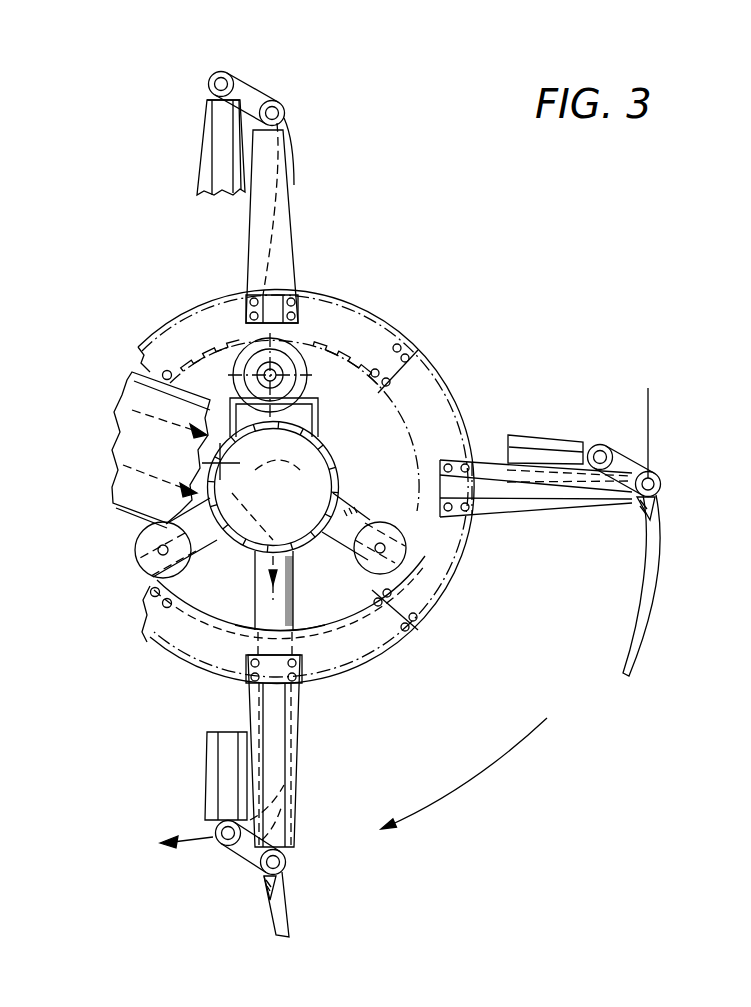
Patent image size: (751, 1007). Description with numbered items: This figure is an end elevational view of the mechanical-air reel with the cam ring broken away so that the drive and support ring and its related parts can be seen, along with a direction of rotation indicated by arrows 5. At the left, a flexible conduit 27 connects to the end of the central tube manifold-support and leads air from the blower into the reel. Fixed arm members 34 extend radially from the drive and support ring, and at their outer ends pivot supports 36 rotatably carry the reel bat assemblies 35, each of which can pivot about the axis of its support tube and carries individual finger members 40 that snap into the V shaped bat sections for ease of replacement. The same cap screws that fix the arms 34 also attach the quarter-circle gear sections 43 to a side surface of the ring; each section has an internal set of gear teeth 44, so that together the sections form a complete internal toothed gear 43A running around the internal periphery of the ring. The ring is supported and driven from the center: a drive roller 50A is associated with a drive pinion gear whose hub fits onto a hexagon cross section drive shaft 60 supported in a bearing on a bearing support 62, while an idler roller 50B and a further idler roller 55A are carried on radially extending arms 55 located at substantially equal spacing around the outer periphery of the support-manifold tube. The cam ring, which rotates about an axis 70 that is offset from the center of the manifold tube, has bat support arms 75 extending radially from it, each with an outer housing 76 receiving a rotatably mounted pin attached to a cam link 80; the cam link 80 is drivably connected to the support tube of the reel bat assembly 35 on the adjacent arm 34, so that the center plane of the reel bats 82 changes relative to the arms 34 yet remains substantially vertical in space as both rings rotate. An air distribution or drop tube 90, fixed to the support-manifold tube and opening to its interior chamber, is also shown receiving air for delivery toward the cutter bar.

The direction arrow 5 is at (200, 258).
The flexible conduit 27 is at (128, 502).
The arm member 34 is at (294, 196).
The reel bat assembly 35 is at (667, 508).
The pivot support 36 is at (330, 78).
The finger member 40 is at (283, 140).
The gear section 43 is at (334, 668).
The internal toothed gear 43A is at (342, 620).
The internal gear teeth 44 is at (340, 354).
The drive roller 50A is at (252, 343).
The idler roller 50B is at (405, 540).
The radially extending arm 55 is at (353, 507).
The roller 55A is at (152, 555).
The drive shaft 60 is at (277, 375).
The bearing support 62 is at (318, 410).
The axis of cam ring 70 is at (222, 463).
The bat support arm 75 is at (205, 131).
The outer housing 76 is at (207, 100).
The cam link 80 is at (243, 90).
The center plane of the reel bats 82 is at (655, 400).
The air distribution or drop tube 90 is at (288, 717).